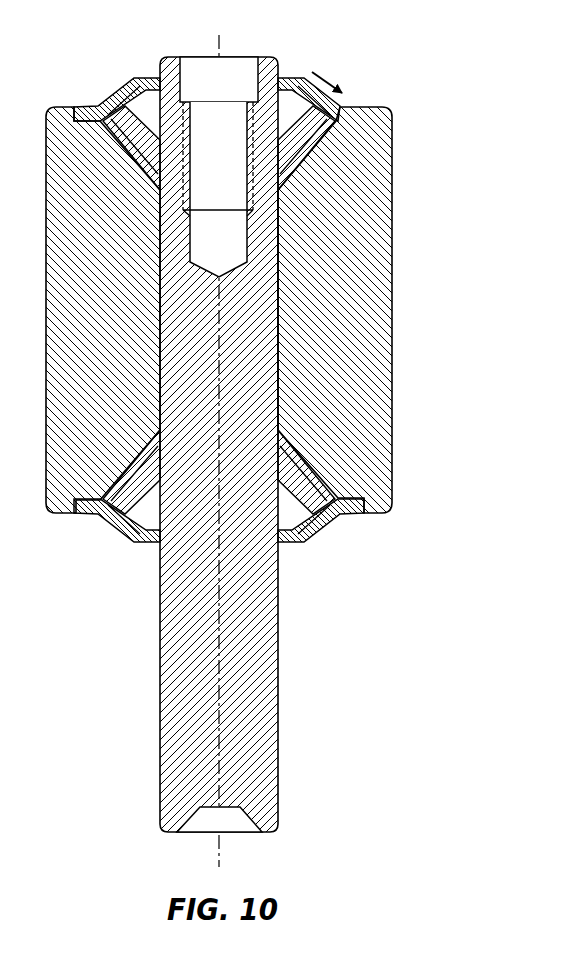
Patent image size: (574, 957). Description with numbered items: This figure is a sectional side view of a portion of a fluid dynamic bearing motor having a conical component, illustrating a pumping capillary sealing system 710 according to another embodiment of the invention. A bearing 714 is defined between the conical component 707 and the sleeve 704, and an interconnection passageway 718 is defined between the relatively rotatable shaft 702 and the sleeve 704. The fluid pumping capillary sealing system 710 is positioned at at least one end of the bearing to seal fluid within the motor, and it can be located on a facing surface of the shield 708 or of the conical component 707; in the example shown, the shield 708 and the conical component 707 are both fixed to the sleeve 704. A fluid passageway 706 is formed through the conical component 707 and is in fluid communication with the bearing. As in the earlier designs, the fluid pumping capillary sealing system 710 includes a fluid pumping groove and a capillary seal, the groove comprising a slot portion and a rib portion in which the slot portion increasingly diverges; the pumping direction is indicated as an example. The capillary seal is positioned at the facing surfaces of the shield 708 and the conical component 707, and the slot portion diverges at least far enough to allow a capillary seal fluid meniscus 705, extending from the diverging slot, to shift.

The shaft 702 is at (255, 352).
The sleeve 704 is at (345, 320).
The capillary seal fluid meniscus 705 is at (297, 78).
The fluid passageway 706 is at (307, 137).
The conical component 707 is at (148, 106).
The shield 708 is at (112, 110).
The fluid pumping capillary sealing system 710 is at (336, 68).
The bearing 714 is at (307, 165).
The interconnection passageway 718 is at (280, 290).